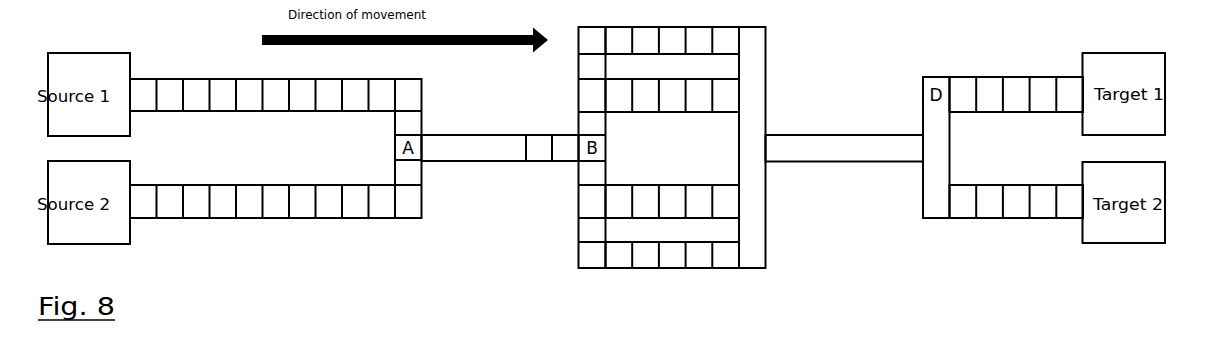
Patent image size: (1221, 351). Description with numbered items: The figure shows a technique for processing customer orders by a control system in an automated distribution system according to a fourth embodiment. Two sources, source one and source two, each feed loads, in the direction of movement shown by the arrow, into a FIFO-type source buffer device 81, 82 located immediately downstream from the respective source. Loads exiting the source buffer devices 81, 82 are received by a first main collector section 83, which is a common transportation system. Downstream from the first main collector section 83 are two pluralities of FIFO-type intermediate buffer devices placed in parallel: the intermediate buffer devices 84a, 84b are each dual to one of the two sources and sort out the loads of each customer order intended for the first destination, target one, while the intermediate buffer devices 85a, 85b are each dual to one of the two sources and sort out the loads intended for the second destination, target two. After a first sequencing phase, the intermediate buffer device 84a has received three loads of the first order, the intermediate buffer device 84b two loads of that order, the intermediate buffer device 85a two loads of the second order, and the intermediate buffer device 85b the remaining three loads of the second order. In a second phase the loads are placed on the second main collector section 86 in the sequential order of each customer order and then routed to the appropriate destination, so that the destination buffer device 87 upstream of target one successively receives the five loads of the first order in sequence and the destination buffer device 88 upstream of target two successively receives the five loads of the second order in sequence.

The source buffer device 81 is at (277, 112).
The source buffer device 82 is at (277, 218).
The first main collector section 83 is at (458, 161).
The intermediate buffer device 84a is at (703, 27).
The intermediate buffer device 84b is at (702, 78).
The intermediate buffer device 85a is at (702, 184).
The intermediate buffer device 85b is at (702, 241).
The second main collector section 86 is at (827, 135).
The destination buffer device 87 is at (1000, 77).
The destination buffer device 88 is at (1000, 218).